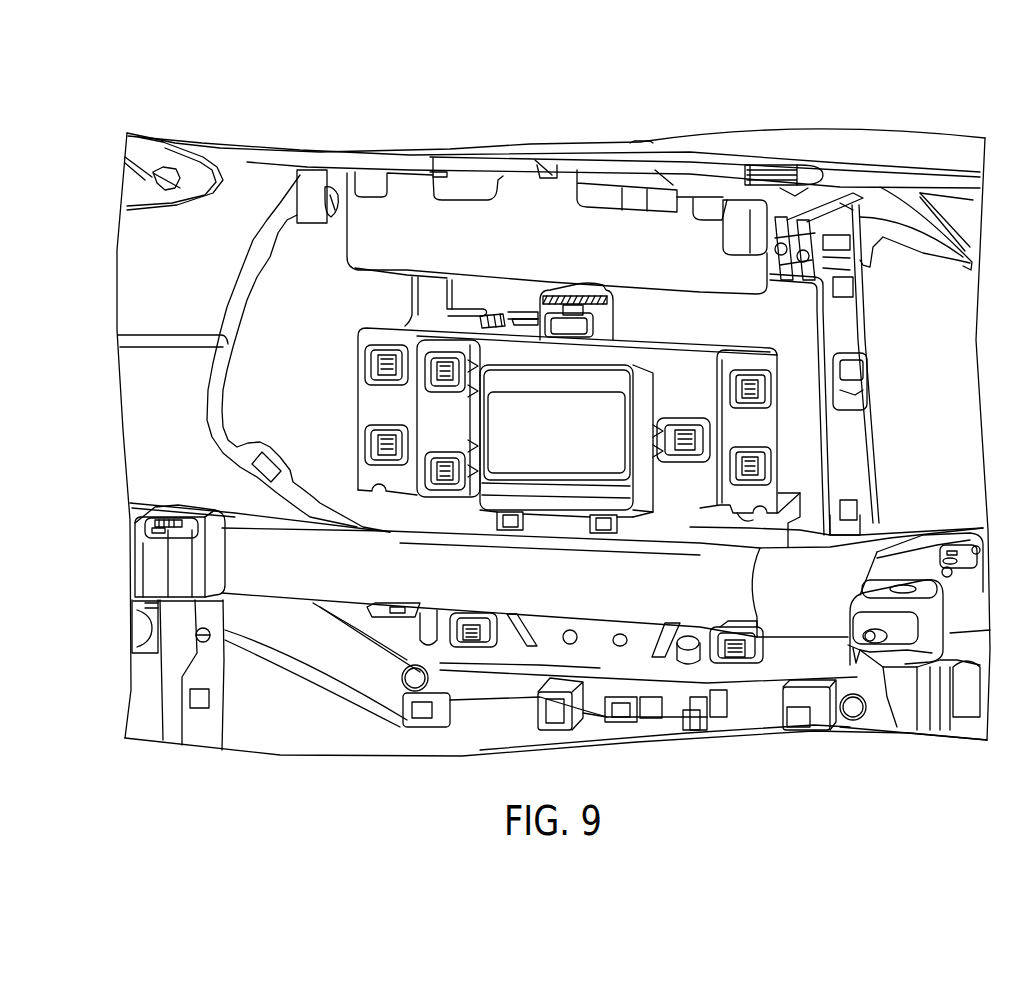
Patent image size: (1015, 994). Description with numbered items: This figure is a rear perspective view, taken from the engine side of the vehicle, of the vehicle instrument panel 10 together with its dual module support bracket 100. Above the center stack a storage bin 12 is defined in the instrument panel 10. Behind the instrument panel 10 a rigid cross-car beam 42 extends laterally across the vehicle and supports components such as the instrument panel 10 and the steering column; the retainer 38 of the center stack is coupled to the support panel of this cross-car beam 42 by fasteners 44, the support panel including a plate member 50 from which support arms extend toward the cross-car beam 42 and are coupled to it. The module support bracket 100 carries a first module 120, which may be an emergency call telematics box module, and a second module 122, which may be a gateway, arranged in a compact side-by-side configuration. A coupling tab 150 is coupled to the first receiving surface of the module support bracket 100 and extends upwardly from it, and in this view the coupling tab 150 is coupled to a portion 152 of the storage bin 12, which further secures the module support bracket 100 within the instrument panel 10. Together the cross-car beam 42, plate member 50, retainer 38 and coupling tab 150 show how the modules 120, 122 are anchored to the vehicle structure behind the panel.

The vehicle instrument panel 10 is at (957, 110).
The storage bin 12 is at (545, 230).
The retainer 38 is at (863, 330).
The cross-car beam 42 is at (340, 580).
The fasteners 44 is at (473, 640).
The plate member 50 is at (607, 653).
The module support bracket 100 is at (358, 326).
The first module 120 is at (722, 332).
The second module 122 is at (543, 490).
The coupling tab 150 is at (600, 315).
The portion of the storage bin 152 is at (612, 294).